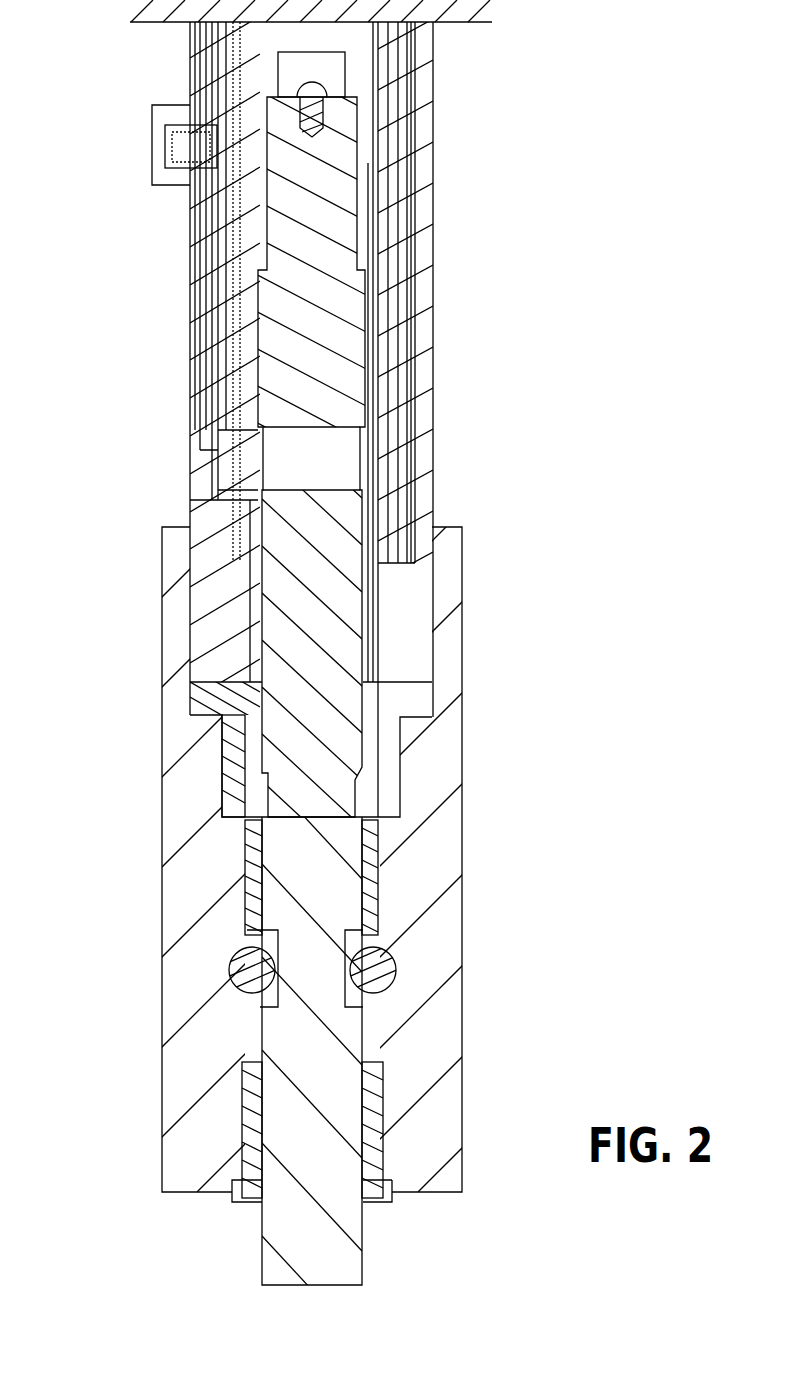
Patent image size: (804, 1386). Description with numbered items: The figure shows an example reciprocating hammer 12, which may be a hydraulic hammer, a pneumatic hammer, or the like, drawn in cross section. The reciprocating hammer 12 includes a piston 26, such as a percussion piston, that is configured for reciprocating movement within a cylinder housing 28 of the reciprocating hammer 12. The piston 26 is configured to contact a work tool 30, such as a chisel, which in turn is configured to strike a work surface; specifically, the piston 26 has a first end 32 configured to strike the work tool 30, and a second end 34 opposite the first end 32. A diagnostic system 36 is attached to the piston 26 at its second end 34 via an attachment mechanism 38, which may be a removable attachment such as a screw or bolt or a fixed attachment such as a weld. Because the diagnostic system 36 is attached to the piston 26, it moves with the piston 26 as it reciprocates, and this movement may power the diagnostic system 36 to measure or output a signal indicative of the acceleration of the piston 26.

The reciprocating hammer 12 is at (104, 655).
The piston 26 is at (338, 747).
The cylinder housing 28 is at (398, 610).
The work tool 30 is at (340, 890).
The first end 32 is at (278, 828).
The second end 34 is at (272, 90).
The diagnostic system 36 is at (347, 77).
The attachment mechanism 38 is at (323, 110).